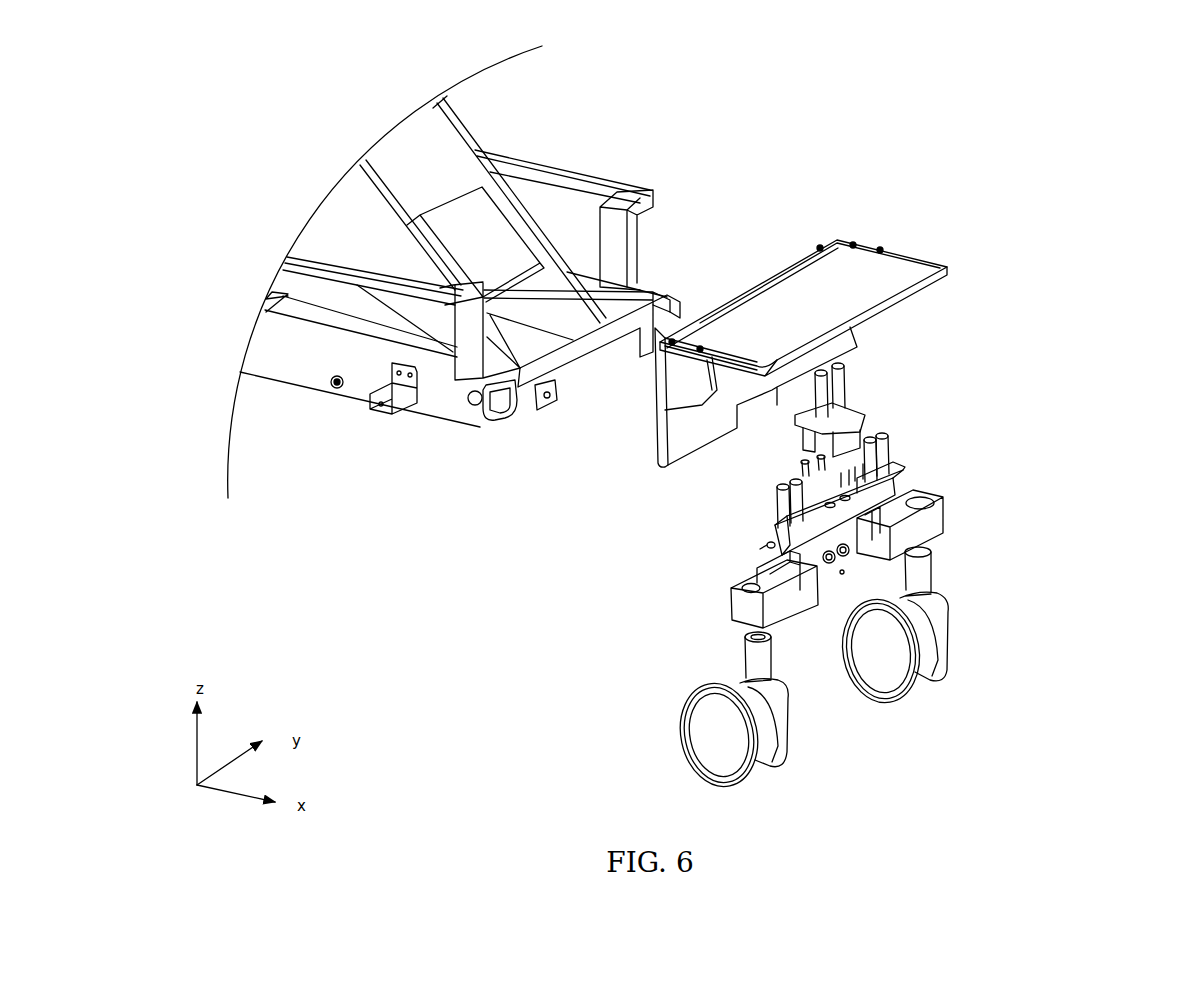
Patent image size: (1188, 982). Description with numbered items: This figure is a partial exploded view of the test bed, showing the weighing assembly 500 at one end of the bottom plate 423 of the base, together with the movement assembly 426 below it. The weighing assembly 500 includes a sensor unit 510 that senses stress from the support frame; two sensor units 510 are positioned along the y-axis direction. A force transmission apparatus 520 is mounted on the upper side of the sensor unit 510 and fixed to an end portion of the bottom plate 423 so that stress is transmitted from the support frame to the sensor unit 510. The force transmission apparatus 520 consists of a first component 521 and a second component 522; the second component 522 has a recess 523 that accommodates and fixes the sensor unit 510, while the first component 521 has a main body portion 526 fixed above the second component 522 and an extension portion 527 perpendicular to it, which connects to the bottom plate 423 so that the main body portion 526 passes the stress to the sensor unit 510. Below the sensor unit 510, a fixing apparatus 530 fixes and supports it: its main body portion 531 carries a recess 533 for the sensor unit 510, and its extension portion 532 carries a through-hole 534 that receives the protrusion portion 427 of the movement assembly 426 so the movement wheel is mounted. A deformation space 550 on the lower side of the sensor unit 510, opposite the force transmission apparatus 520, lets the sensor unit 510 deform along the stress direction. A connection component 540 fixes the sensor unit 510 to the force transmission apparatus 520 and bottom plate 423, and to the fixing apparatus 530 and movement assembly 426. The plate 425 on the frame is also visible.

The weighing assembly 500 is at (1042, 405).
The bottom plate 423 is at (428, 397).
The plate 425 is at (472, 242).
The force transmission apparatus 520 is at (943, 317).
The first component 521 is at (862, 230).
The main body portion 526 is at (888, 263).
The extension portion 527 is at (673, 447).
The second component 522 is at (858, 415).
The recess 523 is at (813, 457).
The connection component 540 is at (898, 435).
The sensor unit 510 is at (892, 490).
The fixing apparatus 530 is at (997, 508).
The main body portion 531 is at (910, 537).
The extension portion 532 is at (945, 517).
The recess 533 is at (860, 553).
The through-hole 534 is at (747, 583).
The deformation space 550 is at (842, 572).
The protrusion portion 427 is at (760, 657).
The movement assembly 426 is at (880, 670).